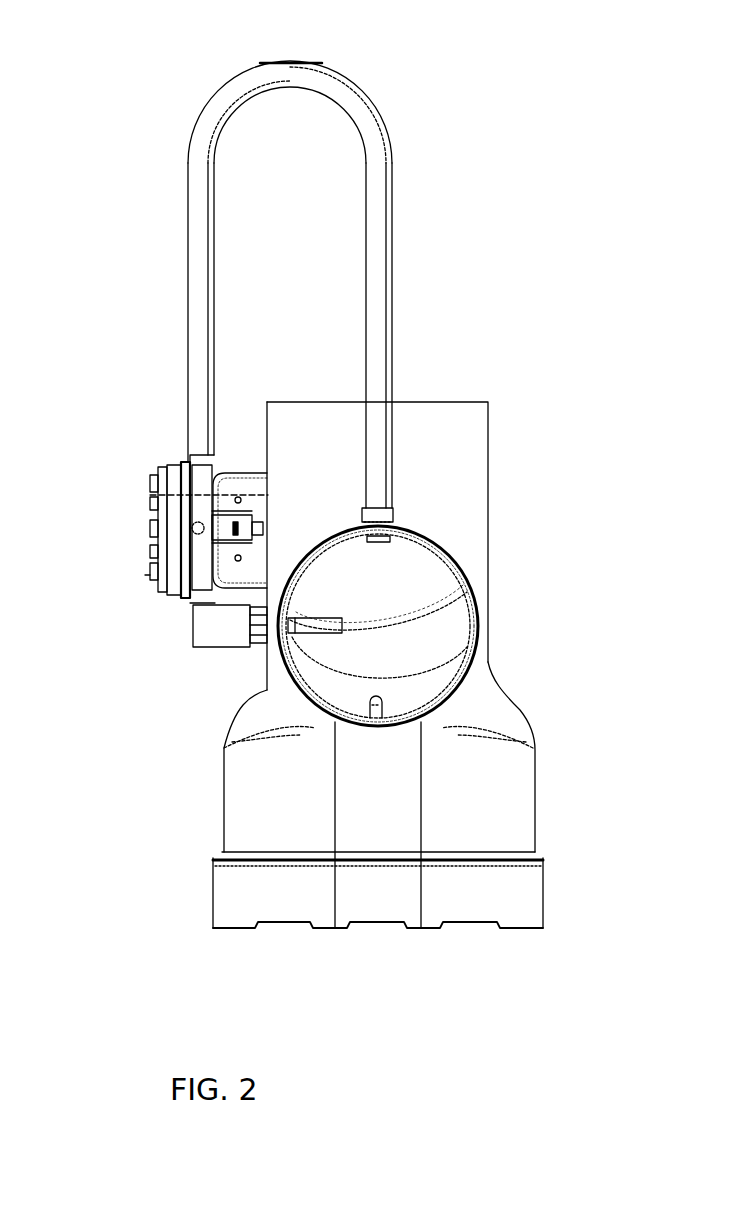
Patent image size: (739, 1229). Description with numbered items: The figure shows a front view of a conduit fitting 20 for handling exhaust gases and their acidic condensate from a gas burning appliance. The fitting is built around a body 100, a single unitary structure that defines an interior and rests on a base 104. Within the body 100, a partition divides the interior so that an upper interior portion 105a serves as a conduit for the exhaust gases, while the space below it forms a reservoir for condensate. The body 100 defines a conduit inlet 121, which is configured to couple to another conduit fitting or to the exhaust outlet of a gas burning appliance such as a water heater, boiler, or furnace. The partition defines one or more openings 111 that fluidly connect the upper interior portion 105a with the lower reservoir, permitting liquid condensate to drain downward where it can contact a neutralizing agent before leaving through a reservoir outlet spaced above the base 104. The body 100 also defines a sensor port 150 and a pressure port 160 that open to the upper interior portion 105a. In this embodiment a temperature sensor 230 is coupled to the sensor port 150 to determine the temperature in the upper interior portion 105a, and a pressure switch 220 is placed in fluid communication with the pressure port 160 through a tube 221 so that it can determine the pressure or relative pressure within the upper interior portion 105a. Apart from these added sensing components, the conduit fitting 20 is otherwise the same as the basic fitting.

The conduit fitting 20 is at (527, 148).
The tube 221 is at (349, 80).
The pressure switch 220 is at (152, 571).
The temperature sensor 230 is at (263, 648).
The body 100 is at (490, 512).
The sensor port 150 is at (297, 607).
The pressure port 160 is at (387, 553).
The upper interior portion 105a is at (452, 632).
The conduit inlet 121 is at (302, 669).
The openings 111 is at (363, 706).
The base 104 is at (536, 936).